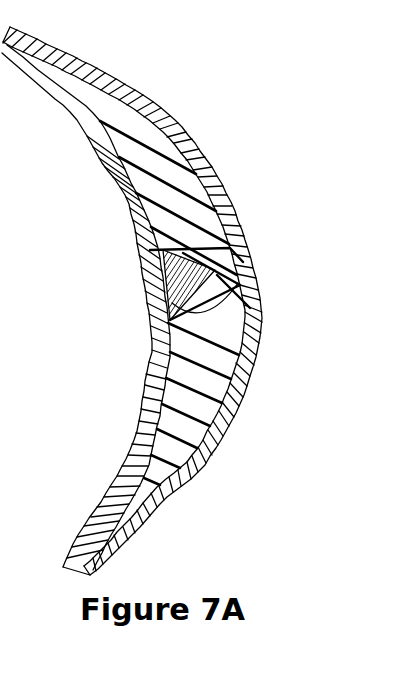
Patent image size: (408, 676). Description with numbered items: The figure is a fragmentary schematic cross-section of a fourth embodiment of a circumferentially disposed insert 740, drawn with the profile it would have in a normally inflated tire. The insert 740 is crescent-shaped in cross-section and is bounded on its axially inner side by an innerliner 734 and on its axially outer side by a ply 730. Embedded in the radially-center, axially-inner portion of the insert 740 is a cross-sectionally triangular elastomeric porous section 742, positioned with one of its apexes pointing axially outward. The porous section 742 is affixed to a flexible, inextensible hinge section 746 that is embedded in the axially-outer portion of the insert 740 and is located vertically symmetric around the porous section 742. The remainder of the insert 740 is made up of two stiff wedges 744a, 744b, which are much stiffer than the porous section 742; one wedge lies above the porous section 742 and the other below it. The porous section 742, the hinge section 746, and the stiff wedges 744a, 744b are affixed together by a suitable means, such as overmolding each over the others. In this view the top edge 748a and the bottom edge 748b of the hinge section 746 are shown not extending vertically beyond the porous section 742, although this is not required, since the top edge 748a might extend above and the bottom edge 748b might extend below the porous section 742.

The insert 740 is at (160, 110).
The stiff wedge 744a is at (178, 180).
The stiff wedge 744b is at (228, 377).
The hinge section 746 is at (235, 242).
The ply 730 is at (212, 438).
The innerliner 734 is at (152, 343).
The porous section 742 is at (152, 271).
The top edge 748a is at (150, 257).
The bottom edge 748b is at (150, 316).